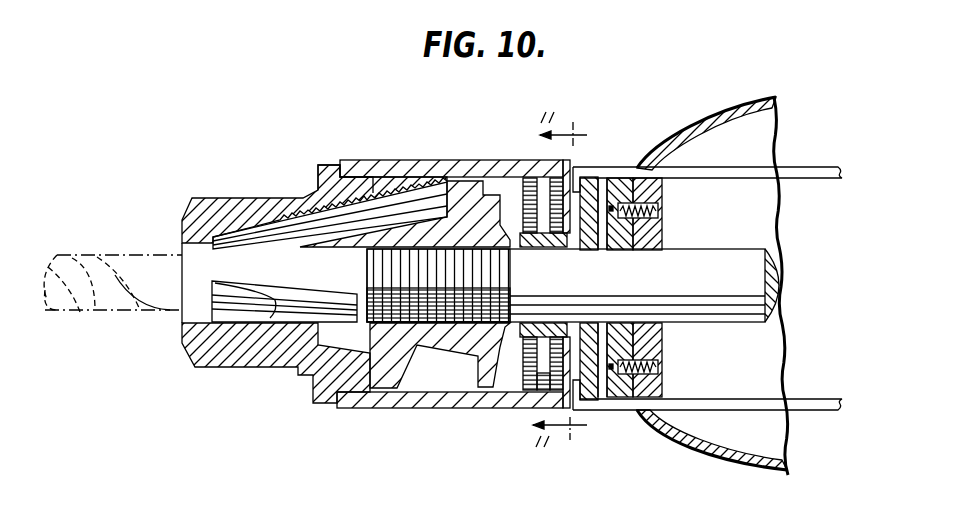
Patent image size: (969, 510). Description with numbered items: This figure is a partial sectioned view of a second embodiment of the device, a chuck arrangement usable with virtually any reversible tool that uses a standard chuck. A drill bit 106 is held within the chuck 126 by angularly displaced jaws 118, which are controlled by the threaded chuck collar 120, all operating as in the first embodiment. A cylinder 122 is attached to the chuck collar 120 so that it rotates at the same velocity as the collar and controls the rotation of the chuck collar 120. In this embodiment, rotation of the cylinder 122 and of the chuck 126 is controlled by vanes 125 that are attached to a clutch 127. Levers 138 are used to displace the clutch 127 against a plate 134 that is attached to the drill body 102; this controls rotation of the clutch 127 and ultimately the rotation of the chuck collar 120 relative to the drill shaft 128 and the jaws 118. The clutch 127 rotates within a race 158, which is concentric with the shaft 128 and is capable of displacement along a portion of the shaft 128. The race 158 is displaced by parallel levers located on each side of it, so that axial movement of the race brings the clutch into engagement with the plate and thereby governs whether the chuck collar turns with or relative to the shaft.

The drill body 102 is at (740, 103).
The drill bit 106 is at (80, 312).
The jaws 118 is at (259, 235).
The chuck collar 120 is at (333, 165).
The cylinder 122 is at (423, 160).
The vanes 125 is at (572, 163).
The chuck 126 is at (195, 368).
The clutch 127 is at (583, 177).
The drill shaft 128 is at (611, 277).
The plate 134 is at (637, 200).
The levers 138 is at (822, 167).
The race 158 is at (587, 410).